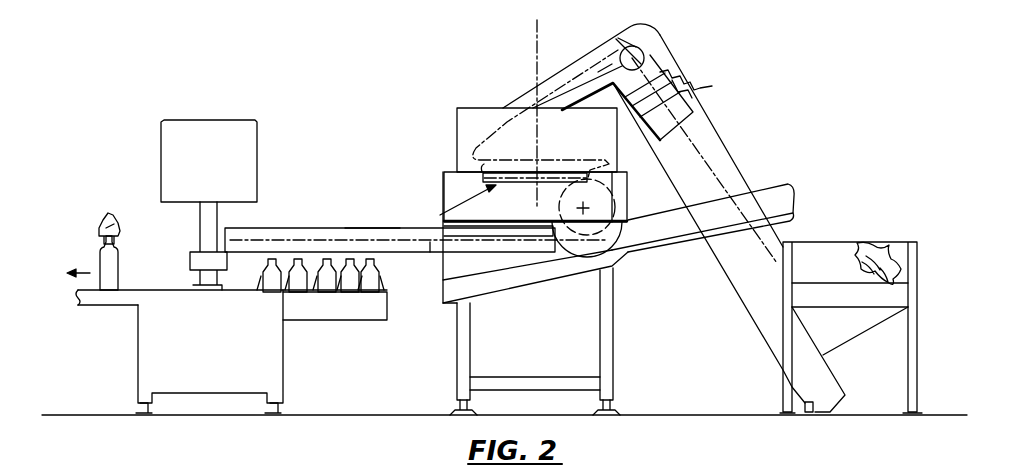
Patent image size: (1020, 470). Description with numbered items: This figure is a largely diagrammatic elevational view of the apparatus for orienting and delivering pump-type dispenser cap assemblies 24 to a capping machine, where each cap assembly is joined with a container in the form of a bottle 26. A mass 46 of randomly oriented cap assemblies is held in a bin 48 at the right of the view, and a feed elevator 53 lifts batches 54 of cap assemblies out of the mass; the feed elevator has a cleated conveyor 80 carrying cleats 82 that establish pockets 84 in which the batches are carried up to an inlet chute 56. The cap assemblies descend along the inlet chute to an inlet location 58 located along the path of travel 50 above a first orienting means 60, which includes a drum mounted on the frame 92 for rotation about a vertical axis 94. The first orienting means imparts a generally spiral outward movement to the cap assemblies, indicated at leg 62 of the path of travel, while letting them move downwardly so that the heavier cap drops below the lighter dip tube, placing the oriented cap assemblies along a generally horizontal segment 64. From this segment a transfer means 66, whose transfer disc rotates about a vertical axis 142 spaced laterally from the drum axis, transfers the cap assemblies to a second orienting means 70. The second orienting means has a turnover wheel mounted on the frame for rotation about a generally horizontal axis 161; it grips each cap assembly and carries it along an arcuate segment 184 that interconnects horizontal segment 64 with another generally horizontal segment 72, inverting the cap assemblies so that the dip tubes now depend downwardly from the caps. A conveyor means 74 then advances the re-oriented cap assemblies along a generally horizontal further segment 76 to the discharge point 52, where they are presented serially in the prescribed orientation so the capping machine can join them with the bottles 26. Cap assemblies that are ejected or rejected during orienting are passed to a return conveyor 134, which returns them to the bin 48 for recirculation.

The pump-type dispenser cap assembly 24 is at (101, 236).
The bottle 26 is at (118, 272).
The mass of randomly oriented cap assemblies 46 is at (897, 226).
The bin 48 is at (828, 226).
The path of travel 50 is at (272, 240).
The discharge point 52 is at (235, 227).
The feed elevator 53 is at (754, 321).
The batch of cap assemblies 54 is at (680, 72).
The inlet chute 56 is at (591, 52).
The inlet location 58 is at (507, 108).
The first orienting means 60 is at (457, 141).
The leg of path of travel 62 is at (533, 158).
The horizontal segment of path of travel 64 is at (483, 174).
The transfer means 66 is at (440, 215).
The second orienting means 70 is at (616, 232).
The horizontal segment of path of travel 72 is at (545, 252).
The conveyor means 74 is at (373, 227).
The further segment of path of travel 76 is at (430, 240).
The cleated conveyor 80 is at (701, 112).
The cleats 82 is at (703, 92).
The pockets 84 is at (660, 47).
The frame 92 is at (613, 314).
The vertical axis 94 is at (534, 52).
The return conveyor 134 is at (782, 184).
The vertical axis 142 is at (525, 186).
The horizontal axis 161 is at (583, 213).
The arcuate segment of path of travel 184 is at (618, 180).